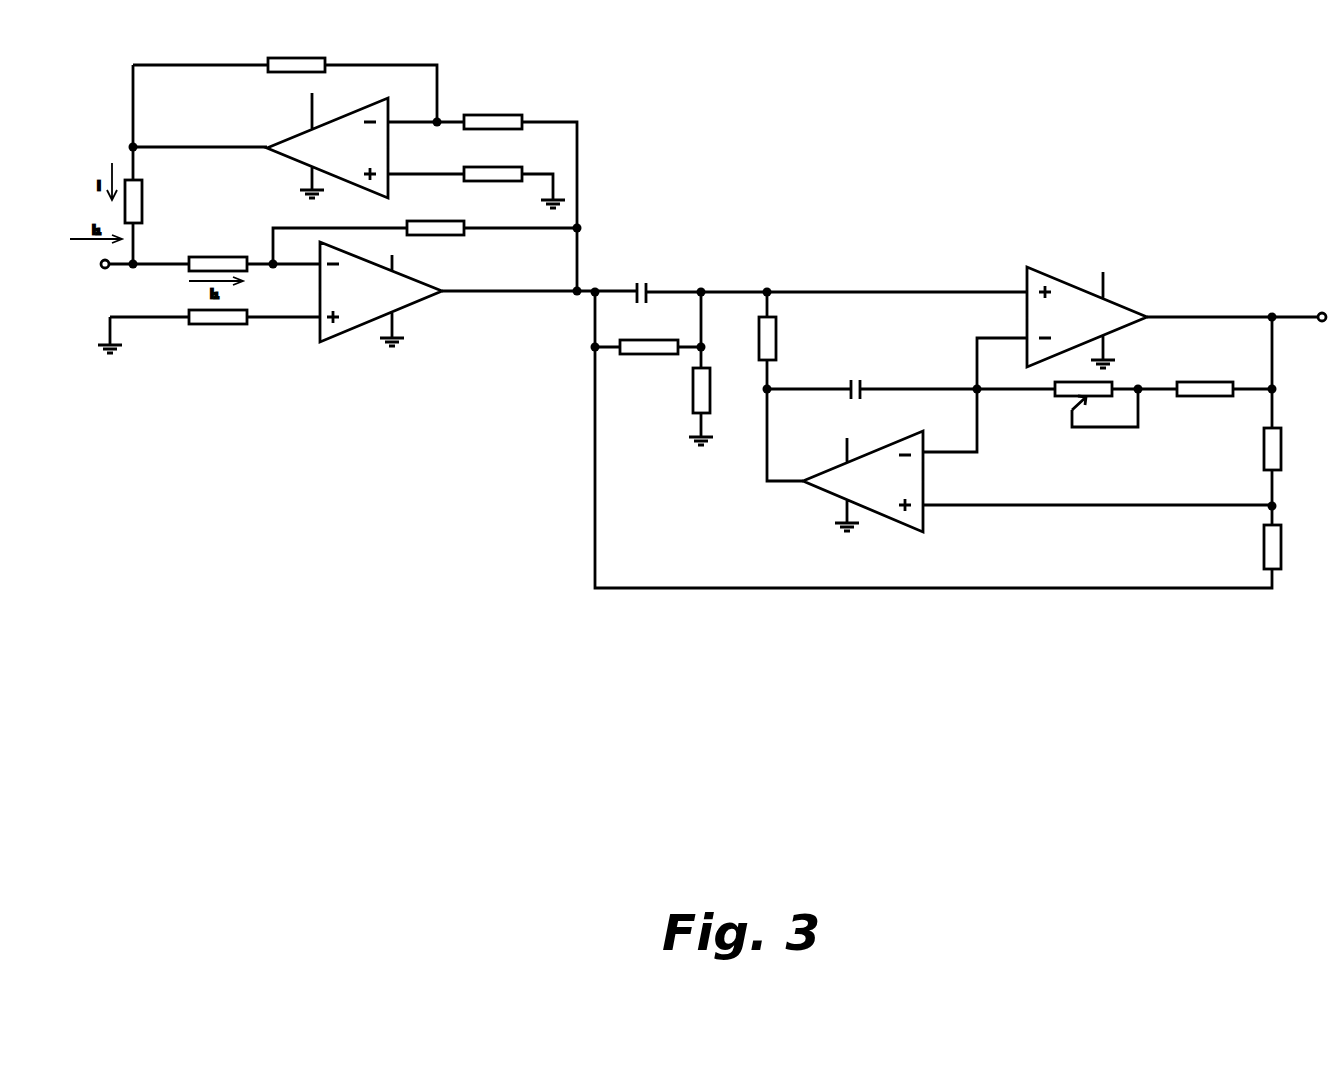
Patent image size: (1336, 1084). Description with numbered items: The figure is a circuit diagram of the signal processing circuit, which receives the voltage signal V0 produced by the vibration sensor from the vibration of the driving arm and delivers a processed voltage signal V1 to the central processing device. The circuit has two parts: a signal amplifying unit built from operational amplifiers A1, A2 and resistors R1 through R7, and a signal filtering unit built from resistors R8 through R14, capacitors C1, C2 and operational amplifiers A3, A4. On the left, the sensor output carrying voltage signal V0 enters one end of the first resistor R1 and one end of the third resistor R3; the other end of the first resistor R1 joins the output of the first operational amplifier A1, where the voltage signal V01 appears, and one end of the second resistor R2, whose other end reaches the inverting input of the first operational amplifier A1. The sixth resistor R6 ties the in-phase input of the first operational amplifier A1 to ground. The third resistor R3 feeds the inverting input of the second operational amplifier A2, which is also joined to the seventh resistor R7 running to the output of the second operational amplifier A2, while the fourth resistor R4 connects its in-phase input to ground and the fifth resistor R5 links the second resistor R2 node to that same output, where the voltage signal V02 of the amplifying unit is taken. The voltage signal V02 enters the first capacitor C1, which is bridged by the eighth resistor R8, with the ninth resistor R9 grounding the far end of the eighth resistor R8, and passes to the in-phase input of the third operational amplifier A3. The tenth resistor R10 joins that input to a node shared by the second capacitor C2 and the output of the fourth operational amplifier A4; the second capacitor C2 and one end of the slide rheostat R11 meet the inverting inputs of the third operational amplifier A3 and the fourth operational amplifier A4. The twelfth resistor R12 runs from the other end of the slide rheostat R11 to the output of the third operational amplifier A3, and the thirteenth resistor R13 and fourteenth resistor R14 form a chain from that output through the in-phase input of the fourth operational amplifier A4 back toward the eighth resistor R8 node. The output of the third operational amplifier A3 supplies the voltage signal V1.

The first resistor R1 is at (145, 201).
The second resistor R2 is at (296, 56).
The third resistor R3 is at (218, 255).
The fourth resistor R4 is at (218, 325).
The fifth resistor R5 is at (493, 113).
The sixth resistor R6 is at (493, 165).
The seventh resistor R7 is at (435, 219).
The eighth resistor R8 is at (649, 337).
The ninth resistor R9 is at (688, 390).
The tenth resistor R10 is at (750, 338).
The slide rheostat R11 is at (1072, 398).
The twelfth resistor R12 is at (1205, 380).
The thirteenth resistor R13 is at (1253, 449).
The fourteenth resistor R14 is at (1253, 547).
The first capacitor C1 is at (641, 284).
The second capacitor C2 is at (854, 381).
The first operational amplifier A1 is at (327, 143).
The second operational amplifier A2 is at (381, 291).
The third operational amplifier A3 is at (1087, 313).
The fourth operational amplifier A4 is at (863, 478).
The voltage signal V0 is at (98, 255).
The voltage signal output by operational amplifier A1 V01 is at (101, 147).
The voltage signal output by the signal amplifying unit V02 is at (565, 307).
The processed voltage signal V1 is at (1319, 306).